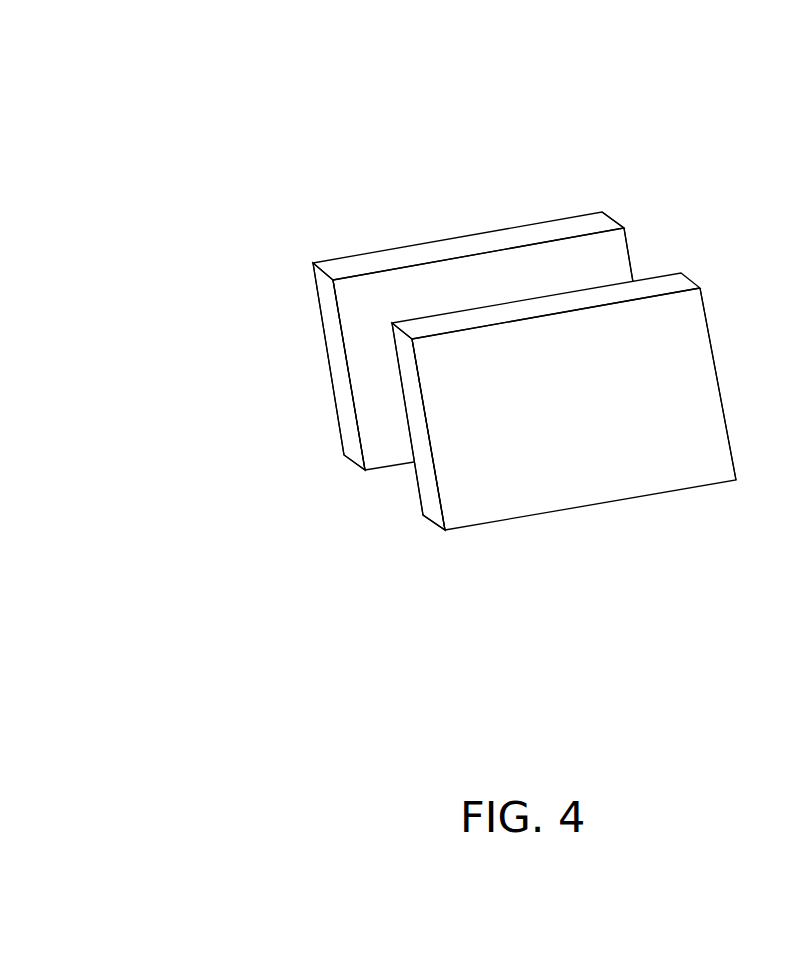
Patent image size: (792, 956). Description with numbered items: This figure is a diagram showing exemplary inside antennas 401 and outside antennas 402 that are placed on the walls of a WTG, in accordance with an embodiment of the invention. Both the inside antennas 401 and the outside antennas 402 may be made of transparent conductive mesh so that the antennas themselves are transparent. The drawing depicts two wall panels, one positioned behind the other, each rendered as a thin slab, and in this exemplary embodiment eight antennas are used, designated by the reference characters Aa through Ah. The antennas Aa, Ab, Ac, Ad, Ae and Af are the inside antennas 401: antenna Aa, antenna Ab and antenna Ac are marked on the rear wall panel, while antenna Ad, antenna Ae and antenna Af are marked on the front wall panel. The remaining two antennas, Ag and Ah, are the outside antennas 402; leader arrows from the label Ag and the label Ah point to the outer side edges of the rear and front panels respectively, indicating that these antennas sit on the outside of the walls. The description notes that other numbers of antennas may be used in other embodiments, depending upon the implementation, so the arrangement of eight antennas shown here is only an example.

The inside antennas 401 is at (128, 60).
The outside antennas 402 is at (146, 96).
The antenna Aa is at (600, 250).
The antenna Ab is at (478, 267).
The antenna Ac is at (356, 375).
The antenna Ad is at (697, 384).
The antenna Ae is at (556, 327).
The antenna Af is at (436, 434).
The antenna Ag is at (314, 310).
The antenna Ah is at (396, 362).